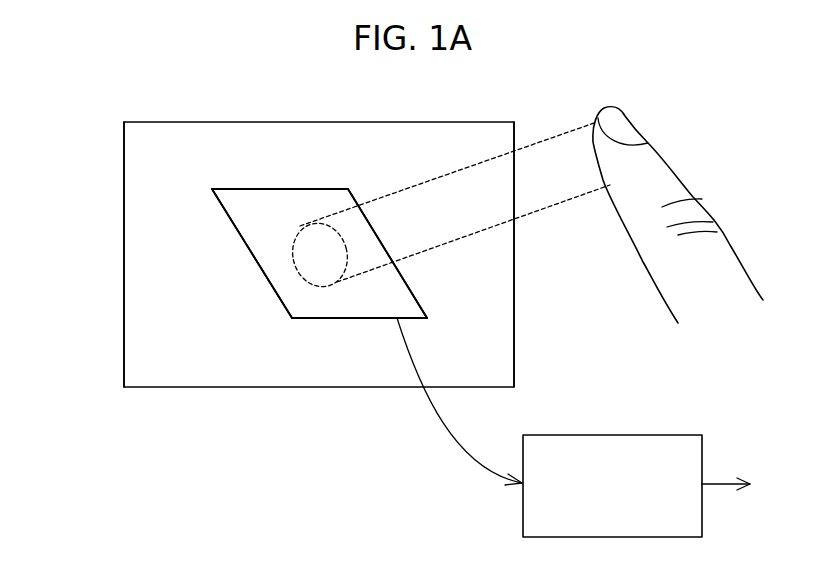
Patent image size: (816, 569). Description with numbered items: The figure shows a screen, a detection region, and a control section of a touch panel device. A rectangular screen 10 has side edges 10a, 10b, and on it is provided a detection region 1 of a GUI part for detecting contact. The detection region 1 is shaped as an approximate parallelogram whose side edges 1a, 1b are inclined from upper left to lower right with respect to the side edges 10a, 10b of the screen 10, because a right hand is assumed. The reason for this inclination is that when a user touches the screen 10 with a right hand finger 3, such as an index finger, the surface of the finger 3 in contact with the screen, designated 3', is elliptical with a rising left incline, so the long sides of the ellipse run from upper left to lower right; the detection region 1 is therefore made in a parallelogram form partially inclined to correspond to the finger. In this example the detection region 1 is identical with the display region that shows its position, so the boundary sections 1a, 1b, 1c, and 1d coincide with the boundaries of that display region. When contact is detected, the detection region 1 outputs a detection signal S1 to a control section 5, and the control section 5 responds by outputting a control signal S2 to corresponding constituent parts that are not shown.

The detection region 1 is at (340, 198).
The side edge of detection region 1a is at (262, 270).
The side edge of detection region 1b is at (406, 283).
The boundary section of detection region 1c is at (290, 189).
The boundary section of detection region 1d is at (348, 320).
The finger 3 is at (678, 215).
The contact surface of finger 3' is at (426, 207).
The control section 5 is at (657, 445).
The screen 10 is at (273, 387).
The side edge of screen 10a is at (124, 219).
The side edge of screen 10b is at (514, 330).
The detection signal S1 is at (459, 401).
The control signal S2 is at (741, 487).